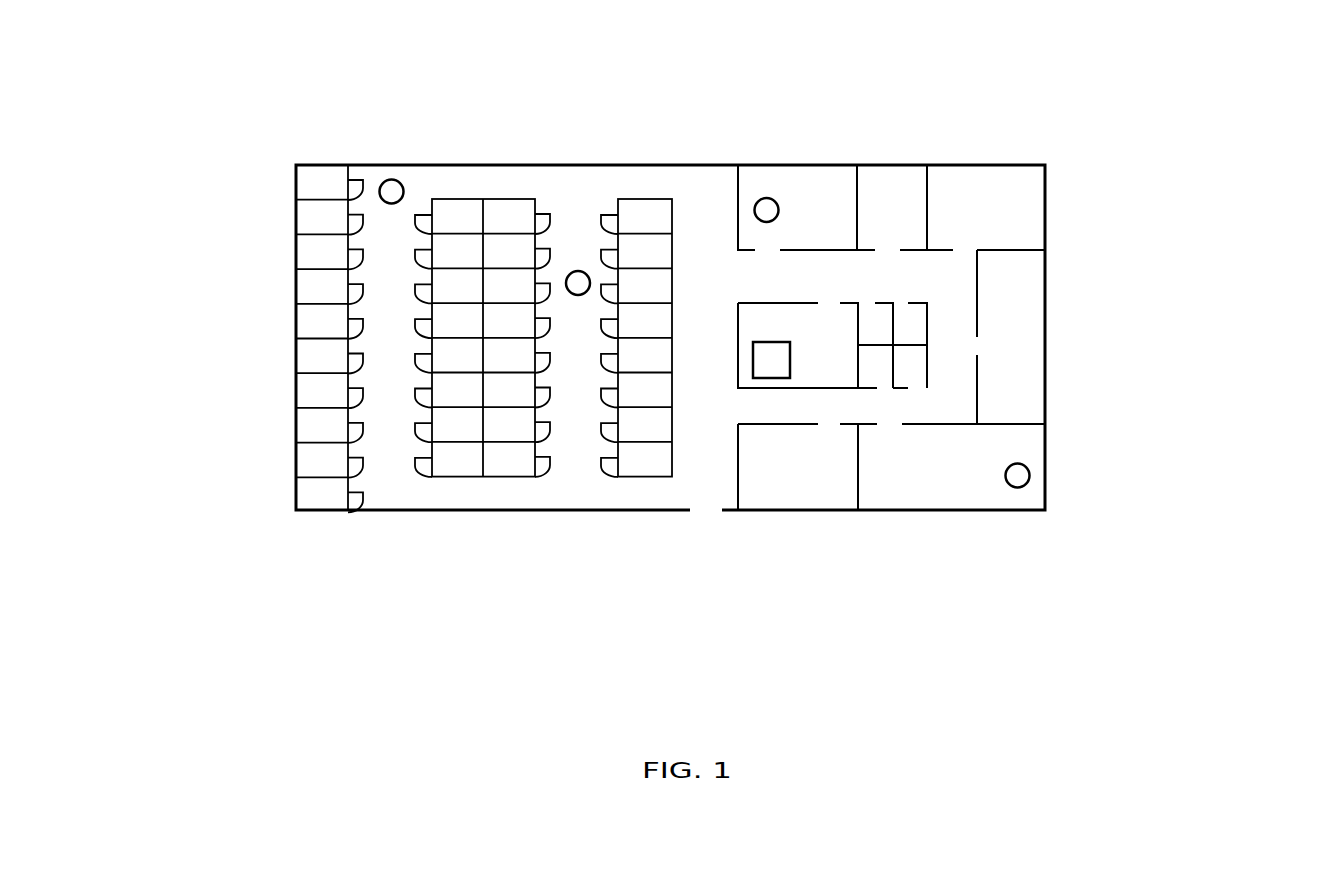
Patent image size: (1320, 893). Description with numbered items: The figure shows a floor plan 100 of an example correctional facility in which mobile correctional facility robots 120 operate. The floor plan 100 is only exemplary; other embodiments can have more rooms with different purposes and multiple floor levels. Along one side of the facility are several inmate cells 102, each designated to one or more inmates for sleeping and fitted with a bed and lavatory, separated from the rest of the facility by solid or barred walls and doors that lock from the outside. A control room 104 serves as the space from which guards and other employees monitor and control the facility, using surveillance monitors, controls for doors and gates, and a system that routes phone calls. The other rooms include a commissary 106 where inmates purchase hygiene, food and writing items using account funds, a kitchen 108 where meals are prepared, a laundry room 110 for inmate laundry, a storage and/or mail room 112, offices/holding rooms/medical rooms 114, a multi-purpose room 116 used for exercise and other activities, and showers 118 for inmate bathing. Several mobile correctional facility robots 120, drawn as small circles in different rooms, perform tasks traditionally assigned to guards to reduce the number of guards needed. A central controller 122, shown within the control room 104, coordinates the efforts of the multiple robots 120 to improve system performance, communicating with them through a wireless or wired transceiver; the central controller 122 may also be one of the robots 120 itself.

The floor plan 100 is at (295, 653).
The inmate cells 102 is at (645, 347).
The control room 104 is at (812, 337).
The commissary 106 is at (798, 204).
The kitchen 108 is at (893, 207).
The laundry room 110 is at (977, 207).
The storage and/or mail room 112 is at (1010, 333).
The offices/holding rooms/medical rooms 114 is at (908, 357).
The multi-purpose room 116 is at (960, 475).
The showers 118 is at (808, 477).
The mobile correctional facility robots 120 is at (391, 191).
The central controller 122 is at (767, 368).